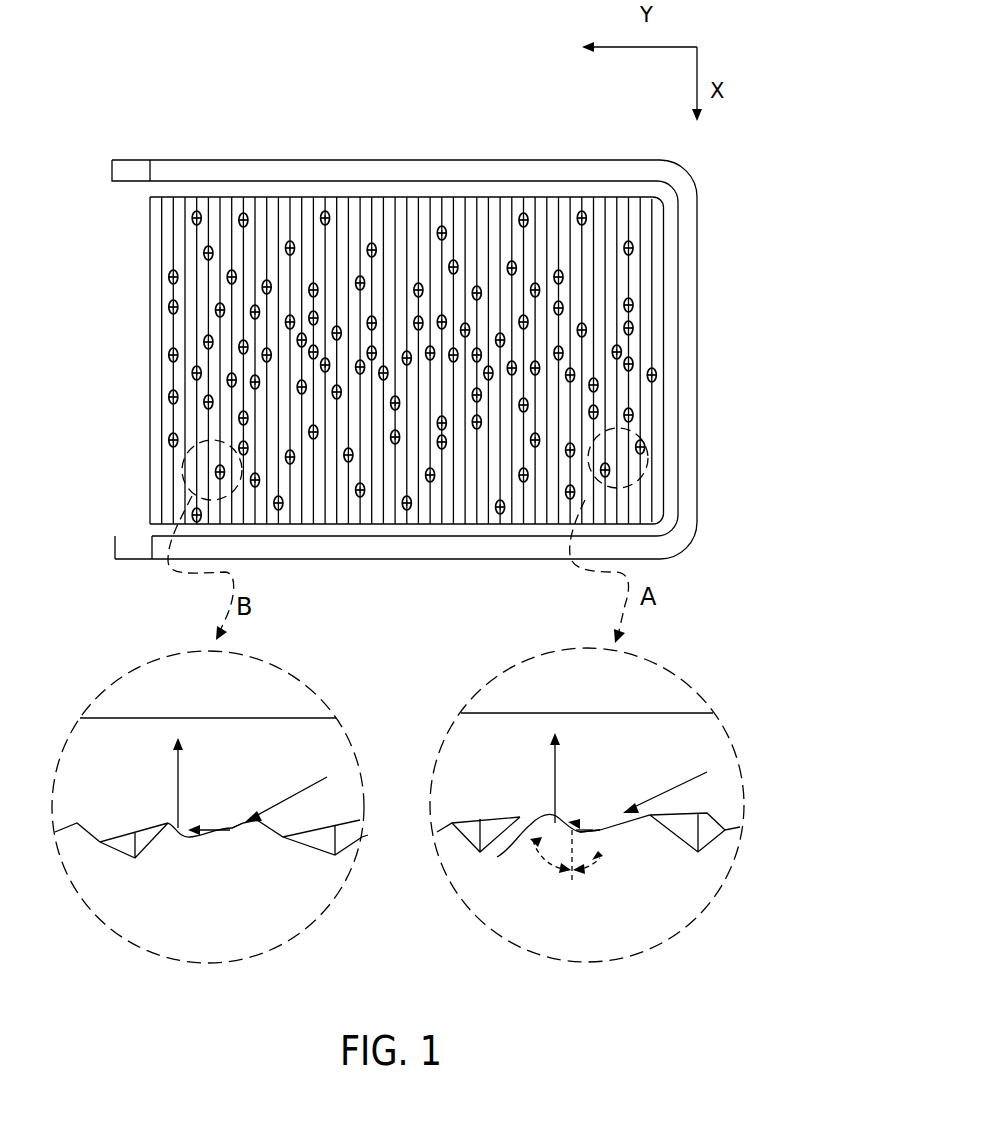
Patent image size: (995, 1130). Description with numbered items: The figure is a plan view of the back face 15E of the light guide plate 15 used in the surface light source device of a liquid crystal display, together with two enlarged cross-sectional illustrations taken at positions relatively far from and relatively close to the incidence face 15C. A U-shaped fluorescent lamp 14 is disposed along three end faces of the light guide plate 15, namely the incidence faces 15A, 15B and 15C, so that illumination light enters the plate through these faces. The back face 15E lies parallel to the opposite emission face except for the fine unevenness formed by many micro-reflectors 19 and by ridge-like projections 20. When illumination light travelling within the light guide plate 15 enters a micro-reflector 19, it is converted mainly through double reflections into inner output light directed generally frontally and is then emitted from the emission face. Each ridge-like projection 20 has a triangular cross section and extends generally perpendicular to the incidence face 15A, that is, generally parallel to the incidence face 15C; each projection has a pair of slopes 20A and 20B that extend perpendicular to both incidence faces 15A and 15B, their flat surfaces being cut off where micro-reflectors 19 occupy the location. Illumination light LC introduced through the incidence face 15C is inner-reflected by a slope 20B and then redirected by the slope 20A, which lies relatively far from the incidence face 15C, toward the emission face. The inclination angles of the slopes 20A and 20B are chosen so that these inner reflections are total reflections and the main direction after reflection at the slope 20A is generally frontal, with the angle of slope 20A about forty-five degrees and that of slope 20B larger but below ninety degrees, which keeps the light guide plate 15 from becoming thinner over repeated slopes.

The U-shaped fluorescent lamp 14 is at (475, 168).
The light guide plate 15 is at (100, 240).
The incidence face 15A is at (318, 197).
The incidence face 15B is at (400, 527).
The incidence face 15C is at (665, 367).
The back face 15E is at (163, 332).
The micro-reflector 19 is at (176, 397).
The ridge-like projection 20 is at (200, 864).
The slope 20A is at (182, 838).
The slope 20B is at (230, 832).
The illumination light LC is at (178, 777).